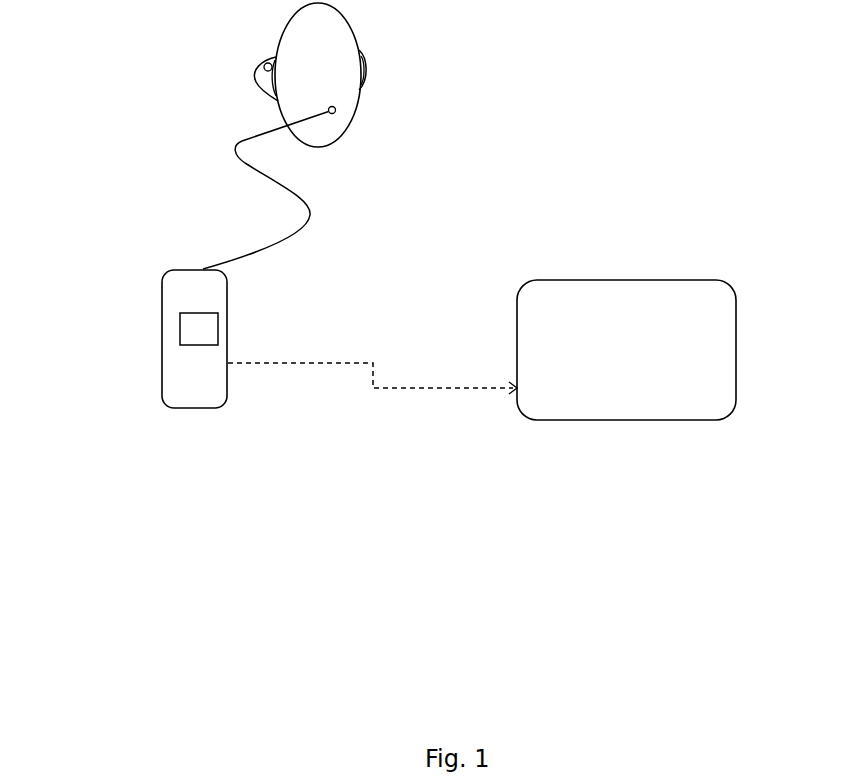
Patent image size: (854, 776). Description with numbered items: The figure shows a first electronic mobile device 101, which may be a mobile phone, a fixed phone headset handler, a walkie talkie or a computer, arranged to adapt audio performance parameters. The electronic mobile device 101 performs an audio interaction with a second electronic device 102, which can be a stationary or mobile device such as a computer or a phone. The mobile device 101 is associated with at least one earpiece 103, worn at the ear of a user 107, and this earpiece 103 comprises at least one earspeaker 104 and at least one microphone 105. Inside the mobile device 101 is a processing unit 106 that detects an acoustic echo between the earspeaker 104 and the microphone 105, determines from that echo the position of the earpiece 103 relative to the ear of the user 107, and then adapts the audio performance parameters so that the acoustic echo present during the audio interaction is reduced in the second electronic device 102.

The first electronic mobile device 101 is at (195, 410).
The second electronic device 102 is at (612, 280).
The earpiece 103 is at (310, 201).
The earspeaker 104 is at (254, 67).
The microphone 105 is at (289, 124).
The processing unit 106 is at (190, 331).
The user 107 is at (370, 101).